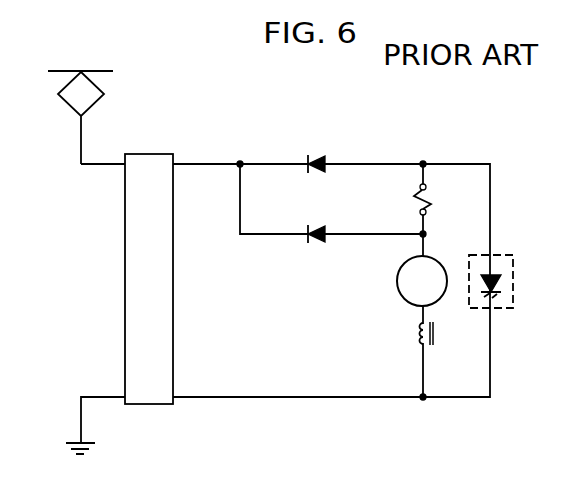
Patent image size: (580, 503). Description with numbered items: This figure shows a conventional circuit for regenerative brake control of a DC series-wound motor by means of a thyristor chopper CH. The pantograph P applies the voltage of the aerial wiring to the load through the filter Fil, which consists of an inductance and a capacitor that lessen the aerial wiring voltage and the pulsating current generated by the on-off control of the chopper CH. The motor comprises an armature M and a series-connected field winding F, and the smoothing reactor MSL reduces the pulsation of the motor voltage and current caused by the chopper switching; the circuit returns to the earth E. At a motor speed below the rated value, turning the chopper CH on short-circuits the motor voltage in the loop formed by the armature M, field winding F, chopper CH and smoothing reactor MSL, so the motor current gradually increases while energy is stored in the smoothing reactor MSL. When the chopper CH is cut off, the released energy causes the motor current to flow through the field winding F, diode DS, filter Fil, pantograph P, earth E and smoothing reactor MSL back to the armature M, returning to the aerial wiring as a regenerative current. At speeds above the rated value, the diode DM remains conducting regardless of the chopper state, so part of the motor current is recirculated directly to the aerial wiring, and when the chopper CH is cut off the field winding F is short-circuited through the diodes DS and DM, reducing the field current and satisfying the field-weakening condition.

The pantograph P is at (77, 113).
The filter Fil is at (143, 154).
The earth E is at (67, 451).
The diode DS is at (318, 174).
The diode for passage of motor current DM is at (320, 246).
The series-connected field winding F is at (432, 191).
The armature of the motor M is at (422, 271).
The smoothing reactor MSL is at (416, 337).
The chopper CH is at (536, 264).